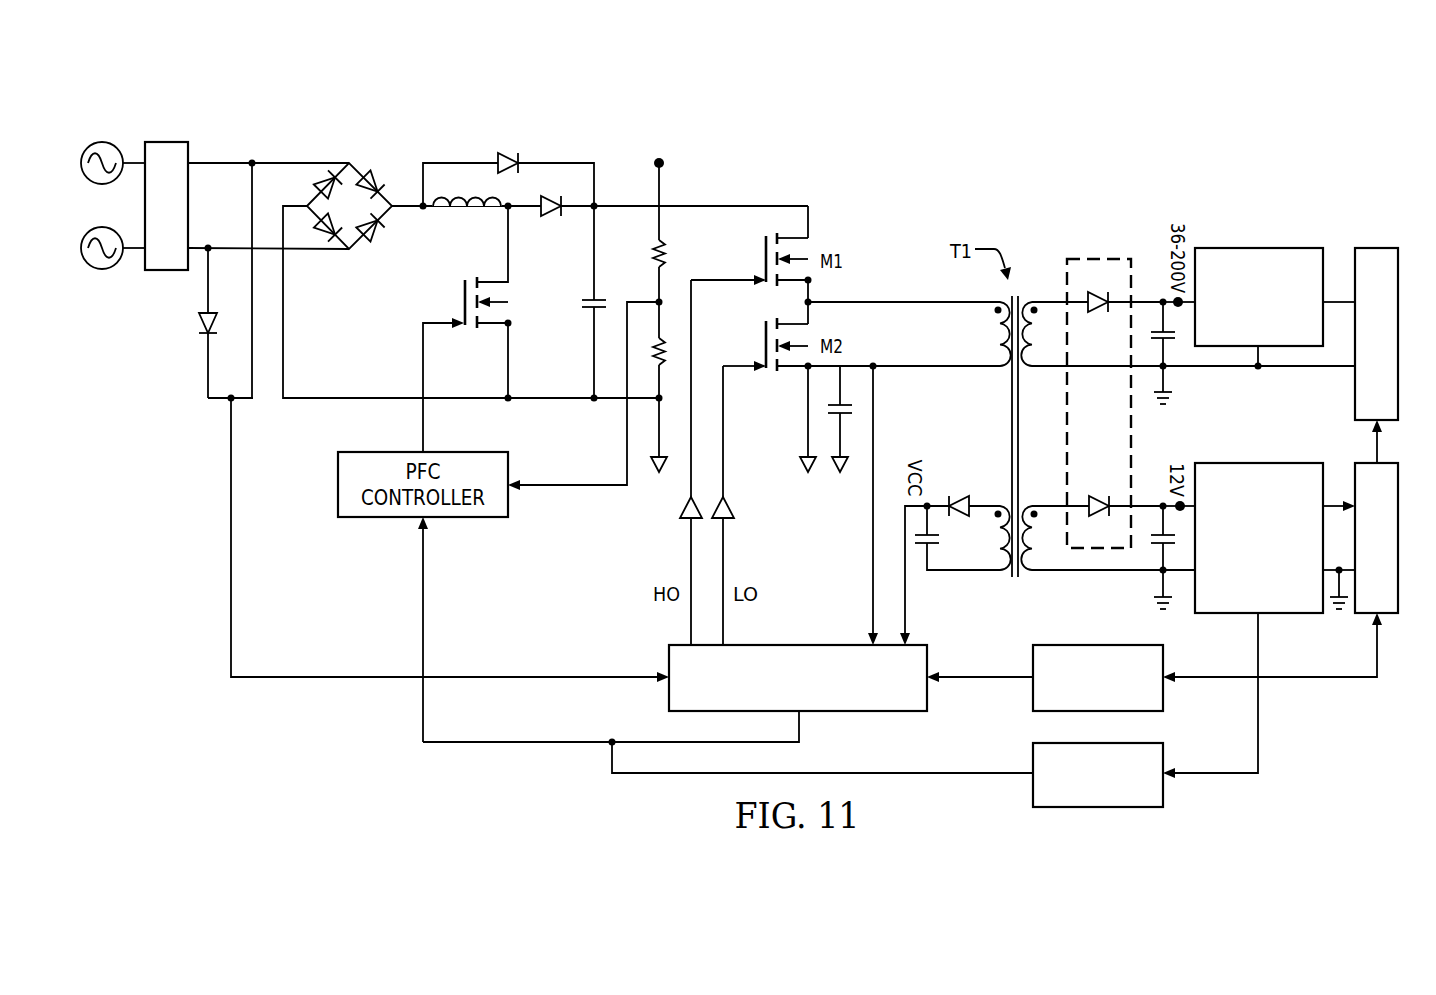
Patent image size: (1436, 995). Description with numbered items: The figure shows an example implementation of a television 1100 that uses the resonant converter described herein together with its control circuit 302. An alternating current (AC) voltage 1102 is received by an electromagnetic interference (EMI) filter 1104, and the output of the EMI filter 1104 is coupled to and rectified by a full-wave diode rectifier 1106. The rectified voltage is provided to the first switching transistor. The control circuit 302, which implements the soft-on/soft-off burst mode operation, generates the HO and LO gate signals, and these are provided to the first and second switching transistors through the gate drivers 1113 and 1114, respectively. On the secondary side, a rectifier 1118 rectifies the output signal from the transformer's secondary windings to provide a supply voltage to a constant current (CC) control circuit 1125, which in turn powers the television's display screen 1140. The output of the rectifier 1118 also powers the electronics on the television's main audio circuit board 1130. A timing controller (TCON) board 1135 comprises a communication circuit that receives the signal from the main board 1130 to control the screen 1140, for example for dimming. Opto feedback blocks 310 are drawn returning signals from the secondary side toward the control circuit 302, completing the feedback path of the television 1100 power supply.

The television 1100 is at (1102, 94).
The alternating current (AC) voltage 1102 is at (98, 142).
The electromagnetic interference (EMI) filter 1104 is at (164, 142).
The full-wave diode rectifier 1106 is at (398, 148).
The gate driver 1113 is at (679, 505).
The gate driver 1114 is at (735, 505).
The rectifier 1118 is at (1102, 248).
The constant current (CC) control circuit 1125 is at (1270, 248).
The main audio circuit board 1130 is at (1270, 463).
The timing controller (TCON) board 1135 is at (1398, 588).
The display screen 1140 is at (1388, 248).
The control circuit 302 is at (810, 645).
The opto feedback 310 is at (1098, 645).